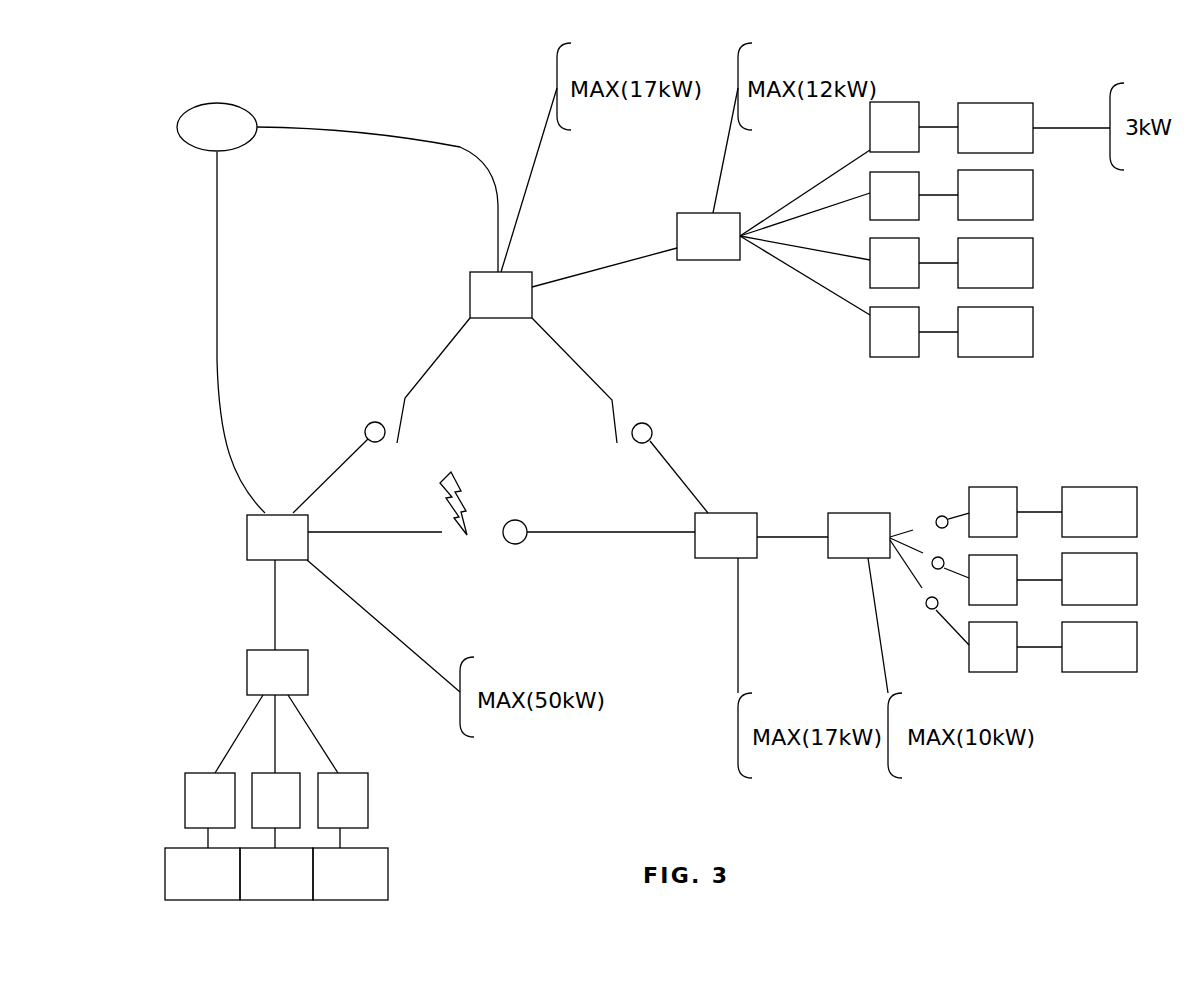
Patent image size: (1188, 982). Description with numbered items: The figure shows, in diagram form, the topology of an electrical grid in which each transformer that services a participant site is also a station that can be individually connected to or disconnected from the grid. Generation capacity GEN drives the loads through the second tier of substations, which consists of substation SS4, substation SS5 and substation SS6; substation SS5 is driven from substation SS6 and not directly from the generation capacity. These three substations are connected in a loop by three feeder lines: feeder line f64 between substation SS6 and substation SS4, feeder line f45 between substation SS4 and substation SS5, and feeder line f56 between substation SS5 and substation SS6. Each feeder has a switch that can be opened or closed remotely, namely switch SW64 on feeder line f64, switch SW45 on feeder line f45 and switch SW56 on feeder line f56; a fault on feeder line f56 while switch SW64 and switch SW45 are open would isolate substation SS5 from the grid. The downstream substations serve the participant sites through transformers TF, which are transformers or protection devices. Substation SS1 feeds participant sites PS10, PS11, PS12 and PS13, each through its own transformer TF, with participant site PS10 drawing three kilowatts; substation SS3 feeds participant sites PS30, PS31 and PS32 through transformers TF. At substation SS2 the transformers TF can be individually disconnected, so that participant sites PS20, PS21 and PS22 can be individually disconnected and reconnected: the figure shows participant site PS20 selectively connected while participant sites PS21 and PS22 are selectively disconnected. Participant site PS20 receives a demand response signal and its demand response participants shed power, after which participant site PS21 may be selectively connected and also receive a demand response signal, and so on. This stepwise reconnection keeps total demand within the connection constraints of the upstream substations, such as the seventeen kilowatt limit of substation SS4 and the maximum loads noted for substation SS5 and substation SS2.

The generation capacity GEN is at (337, 308).
The substation SS1 is at (773, 201).
The substation SS2 is at (898, 603).
The substation SS3 is at (276, 711).
The substation SS4 is at (573, 203).
The substation SS5 is at (761, 603).
The substation SS6 is at (353, 603).
The transformer TF is at (601, 465).
The participant site PS10 is at (1014, 128).
The participant site PS11 is at (976, 195).
The participant site PS12 is at (976, 263).
The participant site PS13 is at (976, 332).
The participant site PS20 is at (1077, 512).
The participant site PS21 is at (1077, 579).
The participant site PS22 is at (1077, 647).
The participant site PS30 is at (202, 864).
The participant site PS31 is at (276, 864).
The participant site PS32 is at (350, 864).
The switch SW64 is at (336, 453).
The switch SW45 is at (682, 462).
The switch SW56 is at (599, 560).
The feeder line f64 is at (427, 380).
The feeder line f45 is at (579, 380).
The feeder line f56 is at (387, 533).